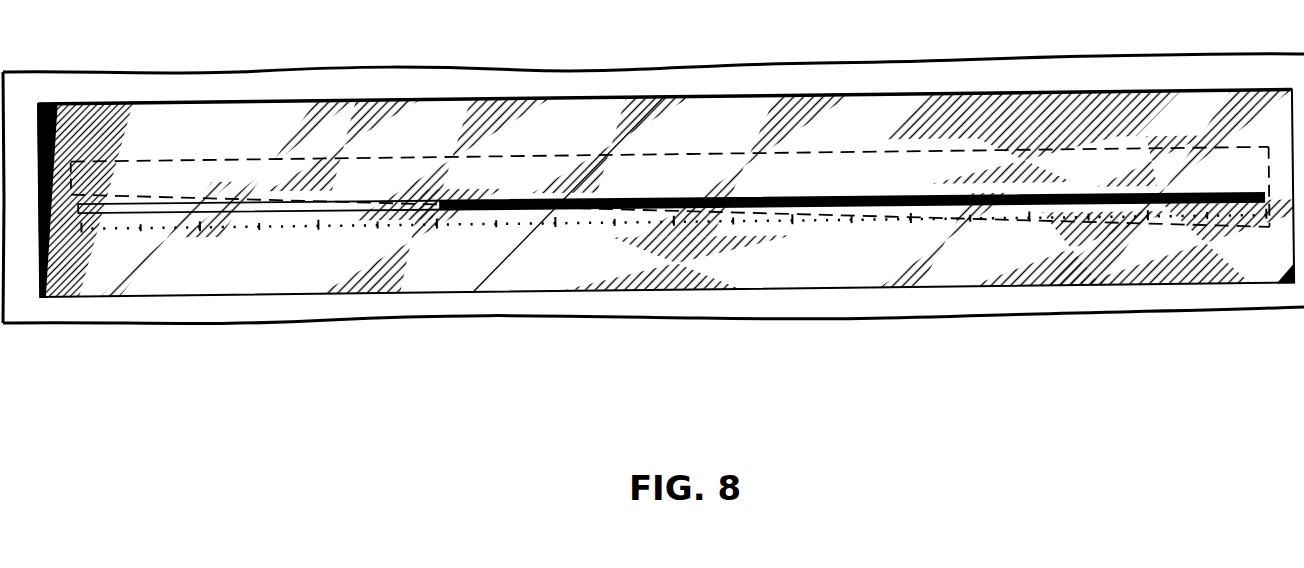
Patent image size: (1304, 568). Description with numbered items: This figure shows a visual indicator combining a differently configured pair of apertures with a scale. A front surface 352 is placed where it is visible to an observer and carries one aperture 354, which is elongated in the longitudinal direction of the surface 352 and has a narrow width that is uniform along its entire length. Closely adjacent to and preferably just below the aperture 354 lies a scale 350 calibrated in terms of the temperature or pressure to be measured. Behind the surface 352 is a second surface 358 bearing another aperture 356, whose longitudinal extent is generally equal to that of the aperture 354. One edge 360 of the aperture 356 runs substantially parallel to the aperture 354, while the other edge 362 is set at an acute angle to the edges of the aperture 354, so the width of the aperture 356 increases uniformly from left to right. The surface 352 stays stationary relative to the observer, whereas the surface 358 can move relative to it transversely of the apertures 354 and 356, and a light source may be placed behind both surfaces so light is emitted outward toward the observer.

The scale 350 is at (908, 212).
The surface 352 is at (176, 102).
The aperture 354 is at (80, 210).
The aperture 356 is at (1128, 165).
The surface 358 is at (272, 102).
The edge 360 is at (382, 157).
The edge 362 is at (1053, 225).